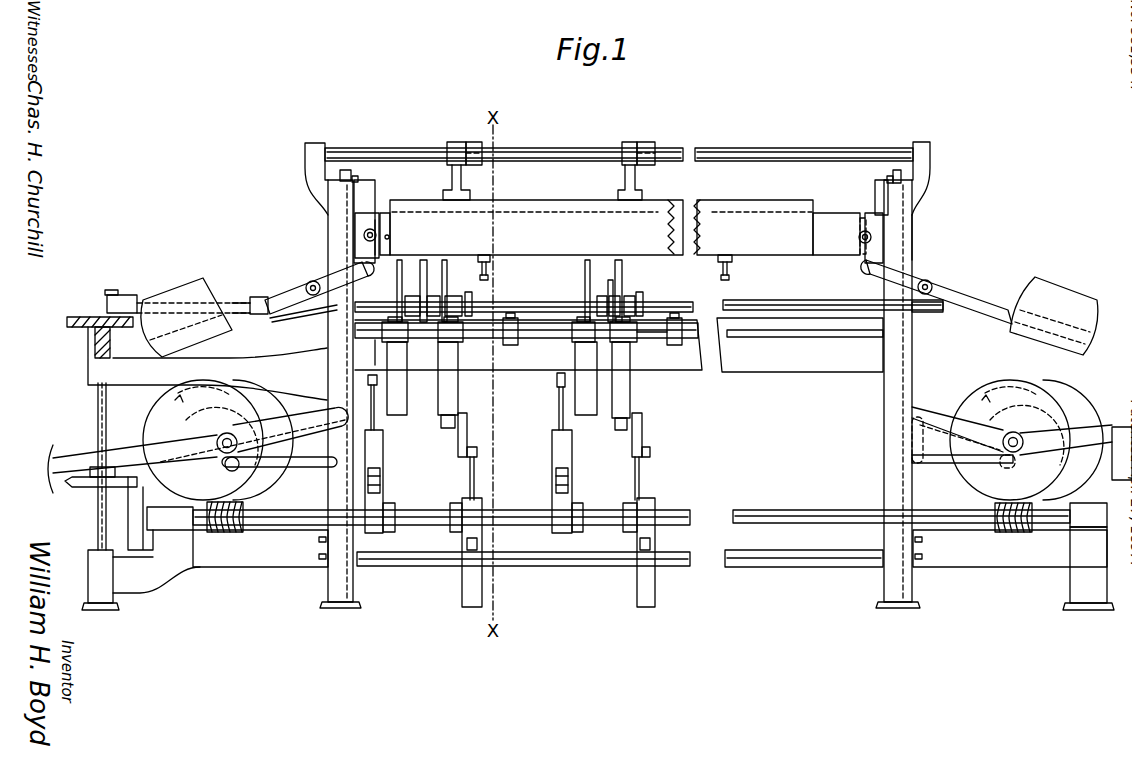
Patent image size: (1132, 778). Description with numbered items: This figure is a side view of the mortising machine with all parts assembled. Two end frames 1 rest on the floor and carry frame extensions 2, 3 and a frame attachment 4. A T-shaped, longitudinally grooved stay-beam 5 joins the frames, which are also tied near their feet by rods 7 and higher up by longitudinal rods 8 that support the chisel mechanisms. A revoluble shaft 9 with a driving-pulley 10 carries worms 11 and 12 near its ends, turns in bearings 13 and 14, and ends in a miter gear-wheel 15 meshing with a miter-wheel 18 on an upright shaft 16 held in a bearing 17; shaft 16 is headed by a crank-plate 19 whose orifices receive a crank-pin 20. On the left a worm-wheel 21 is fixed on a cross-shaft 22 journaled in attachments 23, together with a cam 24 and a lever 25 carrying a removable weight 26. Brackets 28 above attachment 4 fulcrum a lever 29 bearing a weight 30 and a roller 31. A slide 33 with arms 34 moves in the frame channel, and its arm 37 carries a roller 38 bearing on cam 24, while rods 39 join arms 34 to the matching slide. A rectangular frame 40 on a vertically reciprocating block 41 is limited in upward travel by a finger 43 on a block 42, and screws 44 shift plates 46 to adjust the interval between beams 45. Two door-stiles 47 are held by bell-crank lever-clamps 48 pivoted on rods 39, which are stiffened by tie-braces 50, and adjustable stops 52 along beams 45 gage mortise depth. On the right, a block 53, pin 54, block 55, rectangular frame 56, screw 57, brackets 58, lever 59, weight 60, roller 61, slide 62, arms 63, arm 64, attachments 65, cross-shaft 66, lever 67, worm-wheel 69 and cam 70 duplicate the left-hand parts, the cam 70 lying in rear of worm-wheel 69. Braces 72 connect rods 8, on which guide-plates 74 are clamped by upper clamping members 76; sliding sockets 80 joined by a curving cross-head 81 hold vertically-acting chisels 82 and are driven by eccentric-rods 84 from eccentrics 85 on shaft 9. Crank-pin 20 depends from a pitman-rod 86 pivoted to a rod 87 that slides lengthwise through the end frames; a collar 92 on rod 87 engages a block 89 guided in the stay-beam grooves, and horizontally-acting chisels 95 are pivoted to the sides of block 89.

The end frame 1 is at (620, 394).
The frame extension 2 is at (1010, 548).
The frame extension 3 is at (220, 561).
The frame attachment 4 is at (210, 381).
The stay-beam 5 is at (619, 345).
The rods 7 is at (540, 567).
The rods 8 is at (785, 348).
The revoluble shaft 9 is at (760, 510).
The driving-pulley 10 is at (1095, 568).
The worm 11 is at (995, 505).
The worm 12 is at (240, 510).
The bearing 13 is at (1088, 515).
The bearing 14 is at (170, 518).
The miter gear-wheel 15 is at (128, 514).
The upright revoluble shaft 16 is at (97, 511).
The bearing 17 is at (100, 580).
The miter-wheel 18 is at (70, 488).
The crank-plate 19 is at (67, 322).
The crank-pin 20 is at (112, 330).
The worm-wheel 21 is at (223, 506).
The cross-shaft 22 is at (227, 433).
The attachments 23 is at (293, 412).
The cam 24 is at (224, 440).
The lever 25 is at (122, 452).
The weight 26 is at (36, 469).
The brackets 28 is at (312, 315).
The lever 29 is at (285, 292).
The weight 30 is at (186, 317).
The roller 31 is at (342, 289).
The slide 33 is at (326, 238).
The arms 34 is at (304, 162).
The arm 37 is at (300, 467).
The roller 38 is at (236, 470).
The rods 39 is at (386, 148).
The rectangular frame 40 is at (356, 245).
The block 41 is at (371, 221).
The block or projection 42 is at (343, 170).
The finger or pin 43 is at (364, 172).
The screws 44 is at (366, 232).
The beams 45 is at (550, 265).
The plates 46 is at (378, 225).
The door-stiles 47 is at (531, 227).
The bell-crank lever-clamps 48 is at (455, 142).
The tie-braces 50 is at (471, 142).
The adjustable stops 52 is at (490, 260).
The block or projection 53 is at (896, 170).
The finger or pin 54 is at (886, 178).
The block 55 is at (874, 199).
The rectangular frame 56 is at (884, 255).
The screw 57 is at (871, 235).
The brackets 58 is at (925, 313).
The lever 59 is at (966, 298).
The weight 60 is at (1054, 316).
The roller 61 is at (872, 274).
The slide 62 is at (925, 237).
The arms 63 is at (930, 160).
The arm 64 is at (930, 464).
The attachments 65 is at (934, 413).
The cross-shaft 66 is at (1016, 433).
The lever 67 is at (1076, 452).
The worm-wheel 69 is at (1010, 440).
The cam 70 is at (1046, 440).
The braces 72 is at (526, 336).
The guide-plates 74 is at (407, 384).
The upper clamping members 76 is at (651, 345).
The sliding sockets 80 is at (447, 428).
The curving cross-head 81 is at (378, 382).
The vertically-acting chisels 82 is at (493, 291).
The eccentric-rods 84 is at (378, 418).
The eccentrics 85 is at (383, 500).
The pitman-rod 86 is at (234, 302).
The rod 87 is at (670, 302).
The block 89 is at (432, 318).
The collar 92 is at (468, 318).
The horizontally-acting chisel 95 is at (421, 273).